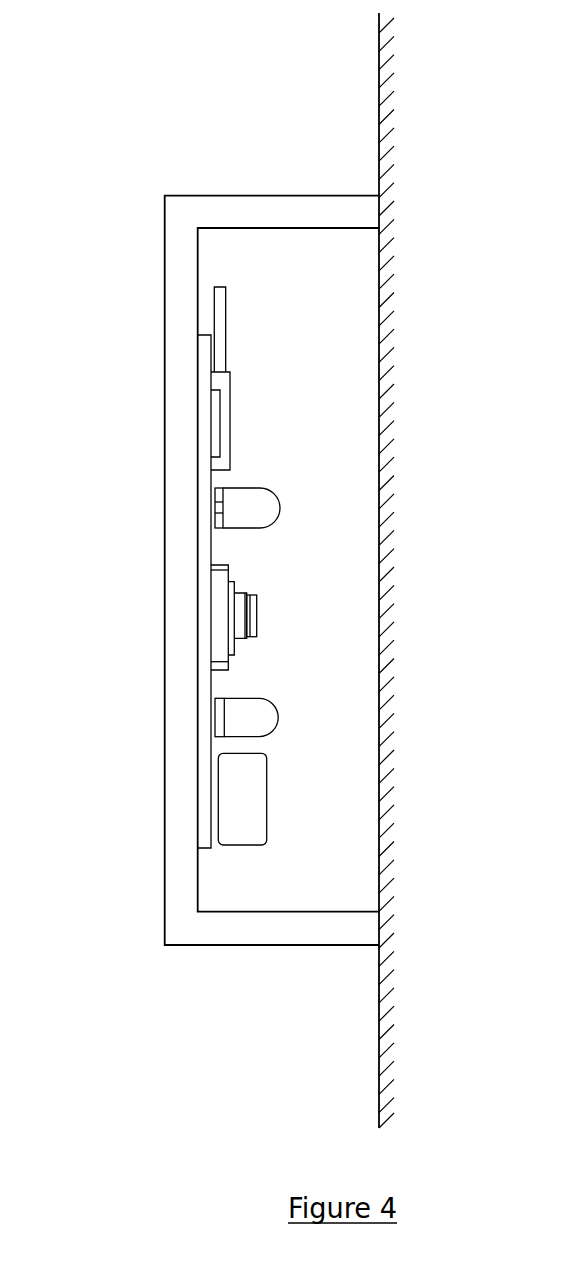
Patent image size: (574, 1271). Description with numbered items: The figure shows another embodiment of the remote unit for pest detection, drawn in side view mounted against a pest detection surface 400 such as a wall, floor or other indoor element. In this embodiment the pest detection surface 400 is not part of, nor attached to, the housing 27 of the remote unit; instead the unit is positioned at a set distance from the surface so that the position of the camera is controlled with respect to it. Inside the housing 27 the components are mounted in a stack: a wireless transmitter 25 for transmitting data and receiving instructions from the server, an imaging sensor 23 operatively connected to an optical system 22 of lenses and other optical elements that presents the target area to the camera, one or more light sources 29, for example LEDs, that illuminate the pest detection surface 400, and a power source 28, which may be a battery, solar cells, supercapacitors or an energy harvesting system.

The pest detection surface 400 is at (378, 130).
The housing 27 is at (182, 722).
The wireless transmitter 25 is at (225, 422).
The imaging sensor 23 is at (225, 658).
The optical system 22 is at (257, 617).
The light source 29 is at (253, 723).
The power source 28 is at (237, 825).